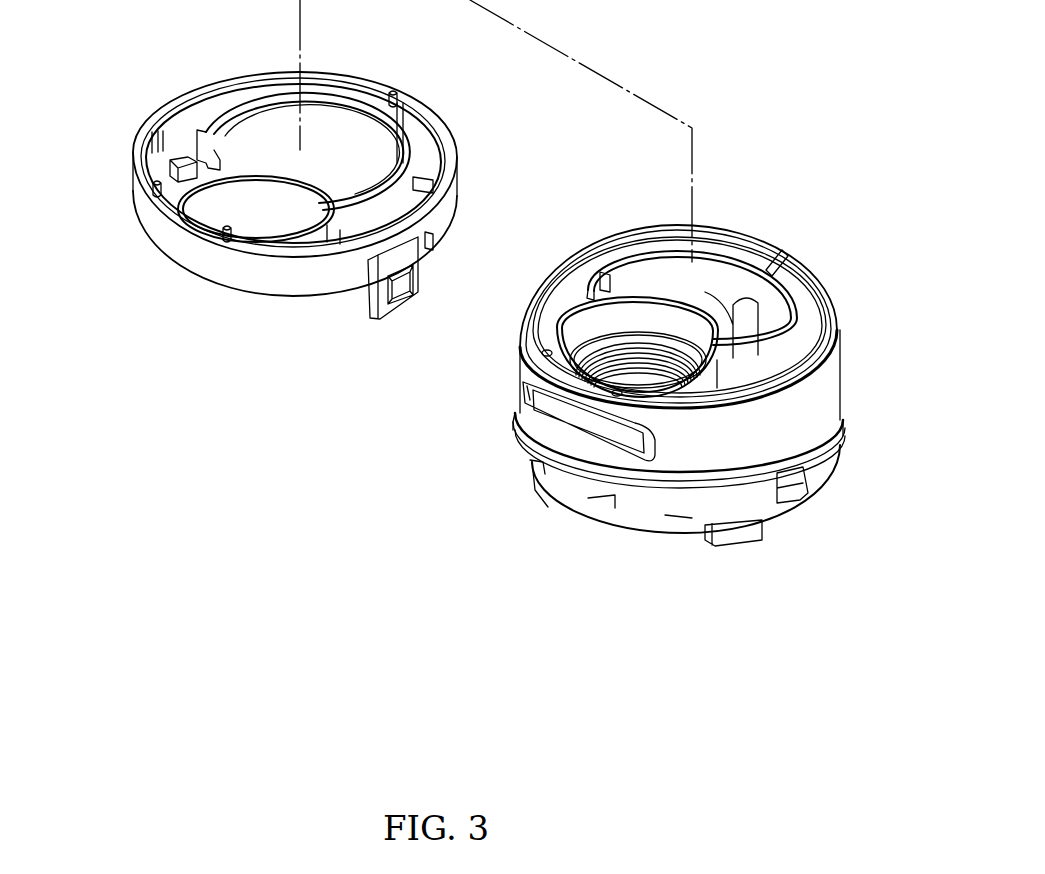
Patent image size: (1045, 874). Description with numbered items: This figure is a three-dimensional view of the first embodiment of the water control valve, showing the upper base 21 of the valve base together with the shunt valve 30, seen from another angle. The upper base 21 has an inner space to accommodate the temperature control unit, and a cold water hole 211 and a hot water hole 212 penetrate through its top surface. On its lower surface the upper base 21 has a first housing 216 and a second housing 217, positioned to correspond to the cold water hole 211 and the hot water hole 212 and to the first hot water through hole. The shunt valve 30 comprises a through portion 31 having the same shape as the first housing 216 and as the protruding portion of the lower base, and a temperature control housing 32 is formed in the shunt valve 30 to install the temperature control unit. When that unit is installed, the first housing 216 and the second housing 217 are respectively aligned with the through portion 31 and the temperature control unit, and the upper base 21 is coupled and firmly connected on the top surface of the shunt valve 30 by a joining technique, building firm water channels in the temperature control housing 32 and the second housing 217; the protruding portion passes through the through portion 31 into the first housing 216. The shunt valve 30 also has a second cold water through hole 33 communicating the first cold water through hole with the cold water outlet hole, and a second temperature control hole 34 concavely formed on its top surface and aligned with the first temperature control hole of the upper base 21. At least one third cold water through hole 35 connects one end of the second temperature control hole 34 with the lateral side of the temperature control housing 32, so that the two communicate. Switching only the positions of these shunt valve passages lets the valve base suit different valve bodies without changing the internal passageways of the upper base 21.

The upper base 21 is at (676, 355).
The cold water hole 211 is at (753, 335).
The hot water hole 212 is at (660, 287).
The first housing 216 is at (738, 277).
The second housing 217 is at (545, 351).
The shunt valve 30 is at (277, 180).
The through portion 31 is at (333, 130).
The temperature control housing 32 is at (250, 218).
The second cold water through hole 33 is at (393, 217).
The second temperature control hole 34 is at (183, 133).
The third cold water through hole 35 is at (158, 200).